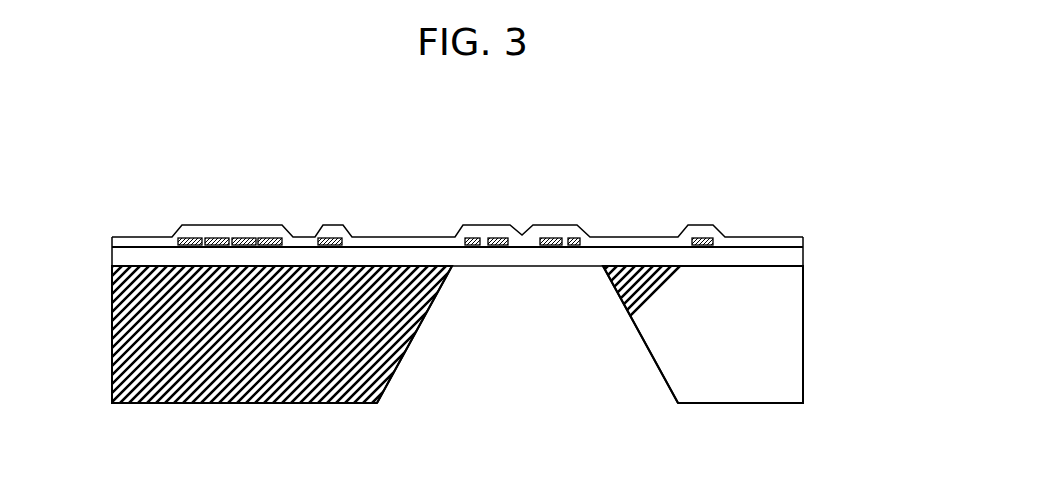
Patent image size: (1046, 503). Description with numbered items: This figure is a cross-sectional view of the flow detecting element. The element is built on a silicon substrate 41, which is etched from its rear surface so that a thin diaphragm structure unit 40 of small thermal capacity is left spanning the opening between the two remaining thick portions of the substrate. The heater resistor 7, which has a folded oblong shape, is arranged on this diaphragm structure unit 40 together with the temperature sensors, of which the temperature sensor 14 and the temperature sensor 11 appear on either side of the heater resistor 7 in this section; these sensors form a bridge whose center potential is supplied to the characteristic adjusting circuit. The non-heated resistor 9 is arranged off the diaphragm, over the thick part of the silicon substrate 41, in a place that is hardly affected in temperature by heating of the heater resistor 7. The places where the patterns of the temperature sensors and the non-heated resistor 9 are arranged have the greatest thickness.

The non-heated resistor 9 is at (217, 238).
The temperature sensor 14 is at (468, 238).
The heater resistor 7 is at (494, 238).
The temperature sensor 11 is at (578, 238).
The diaphragm structure unit 40 is at (498, 267).
The silicon substrate 41 is at (745, 404).